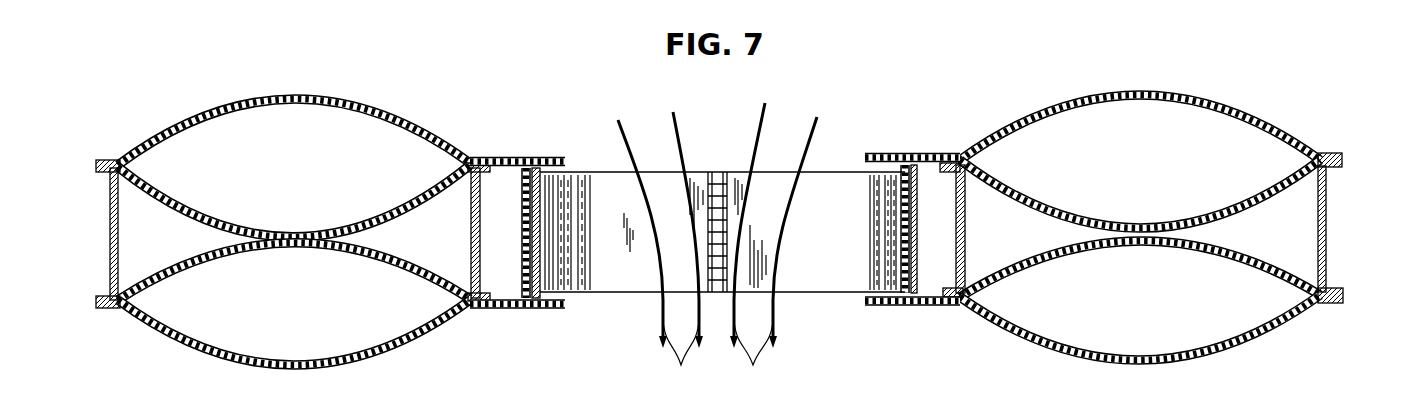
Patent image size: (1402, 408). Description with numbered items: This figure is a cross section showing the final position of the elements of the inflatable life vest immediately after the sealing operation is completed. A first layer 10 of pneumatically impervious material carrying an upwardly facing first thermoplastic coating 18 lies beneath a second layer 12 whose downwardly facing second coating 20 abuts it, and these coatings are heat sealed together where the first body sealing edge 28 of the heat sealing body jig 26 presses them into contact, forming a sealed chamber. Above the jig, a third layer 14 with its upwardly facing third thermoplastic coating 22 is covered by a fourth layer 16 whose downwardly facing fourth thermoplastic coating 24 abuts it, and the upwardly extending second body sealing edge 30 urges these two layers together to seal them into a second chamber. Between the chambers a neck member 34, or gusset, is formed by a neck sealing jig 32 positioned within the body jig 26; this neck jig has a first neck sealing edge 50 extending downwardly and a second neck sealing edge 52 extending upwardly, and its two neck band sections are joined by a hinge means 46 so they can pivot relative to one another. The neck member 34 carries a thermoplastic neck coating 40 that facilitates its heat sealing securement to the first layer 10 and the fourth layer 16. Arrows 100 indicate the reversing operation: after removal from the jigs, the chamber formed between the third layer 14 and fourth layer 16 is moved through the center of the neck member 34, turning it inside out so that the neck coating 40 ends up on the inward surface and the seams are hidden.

The first layer 10 is at (733, 224).
The second layer 12 is at (719, 303).
The third layer 14 is at (162, 198).
The fourth layer 16 is at (372, 110).
The first thermoplastic coating 18 is at (230, 346).
The second coating 20 is at (318, 250).
The third thermoplastic coating 22 is at (190, 198).
The fourth thermoplastic coating 24 is at (962, 163).
The heat sealing body jig 26 is at (108, 214).
The first body sealing edge 28 is at (122, 302).
The second body sealing edge 30 is at (465, 166).
The neck sealing jig 32 is at (660, 172).
The neck member 34 is at (872, 302).
The thermoplastic neck coating 40 is at (522, 238).
The hinge means 46 is at (718, 172).
The first neck sealing edge 50 is at (520, 300).
The second neck sealing edge 52 is at (516, 170).
The arrows 100 is at (720, 356).